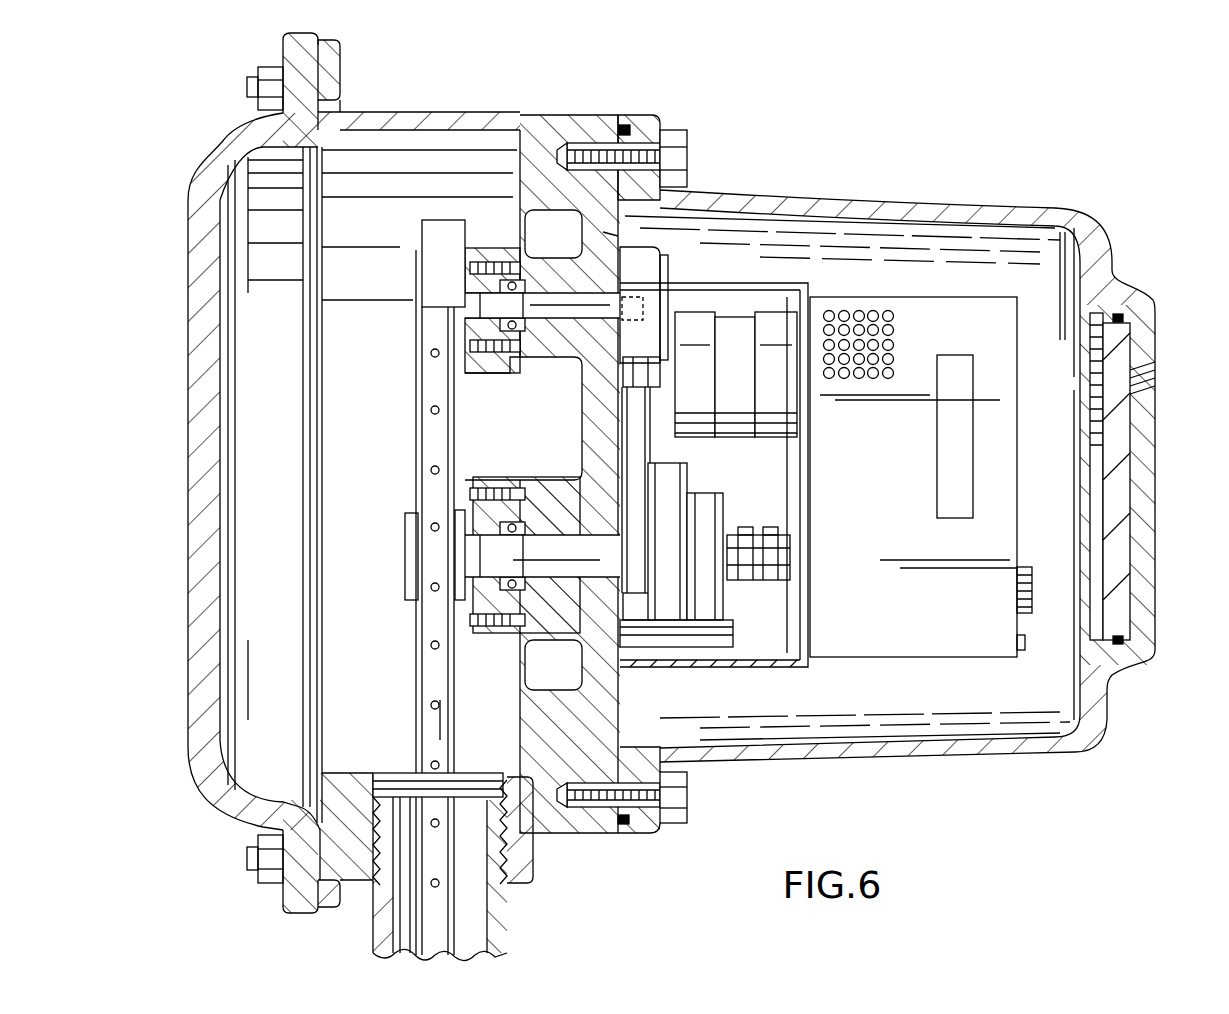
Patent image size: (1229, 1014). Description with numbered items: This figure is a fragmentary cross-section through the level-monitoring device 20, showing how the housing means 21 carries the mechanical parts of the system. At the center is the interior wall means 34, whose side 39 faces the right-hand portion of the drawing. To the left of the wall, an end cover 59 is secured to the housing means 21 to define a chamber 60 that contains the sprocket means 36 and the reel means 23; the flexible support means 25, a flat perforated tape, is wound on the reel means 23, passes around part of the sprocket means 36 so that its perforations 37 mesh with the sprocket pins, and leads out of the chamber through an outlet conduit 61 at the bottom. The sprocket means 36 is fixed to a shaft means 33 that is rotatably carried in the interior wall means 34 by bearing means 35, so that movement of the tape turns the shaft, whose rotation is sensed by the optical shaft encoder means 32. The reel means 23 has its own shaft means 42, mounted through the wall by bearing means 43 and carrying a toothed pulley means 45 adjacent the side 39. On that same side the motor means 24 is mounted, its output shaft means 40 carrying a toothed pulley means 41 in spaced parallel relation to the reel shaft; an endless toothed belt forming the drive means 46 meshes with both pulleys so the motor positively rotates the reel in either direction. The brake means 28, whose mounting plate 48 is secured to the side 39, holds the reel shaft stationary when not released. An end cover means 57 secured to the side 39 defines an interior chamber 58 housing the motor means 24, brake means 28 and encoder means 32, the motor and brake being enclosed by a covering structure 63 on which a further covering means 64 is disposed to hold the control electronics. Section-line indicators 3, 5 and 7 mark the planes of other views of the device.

The device 20 is at (927, 446).
The housing means 21 is at (513, 112).
The reel means 23 is at (420, 478).
The motor means 24 is at (737, 313).
The flexible support means 25 is at (432, 728).
The brake means 28 is at (723, 510).
The optical shaft encoder means 32 is at (670, 257).
The shaft means 33 is at (548, 290).
The interior wall means 34 is at (603, 232).
The bearing means 35 is at (513, 270).
The sprocket means 36 is at (420, 330).
The perforations 37 is at (430, 410).
The side 39 is at (620, 703).
The output shaft means 40 is at (663, 370).
The pinion gear means or toothed pulley means 41 is at (613, 380).
The shaft means 42 is at (548, 540).
The bearing means 43 is at (513, 520).
The pinion gear means or toothed pulley means 45 is at (652, 503).
The drive means 46 is at (652, 452).
The mounting plate 48 is at (683, 620).
The end cover means 57 is at (867, 190).
The interior chamber 58 is at (925, 237).
The end cover 59 is at (190, 540).
The chamber 60 is at (432, 152).
The outlet conduit 61 is at (505, 920).
The covering structure 63 is at (773, 668).
The covering means 64 is at (897, 645).
The section line 3 is at (1048, 242).
The section line 5 is at (300, 22).
The section line 7 is at (633, 78).